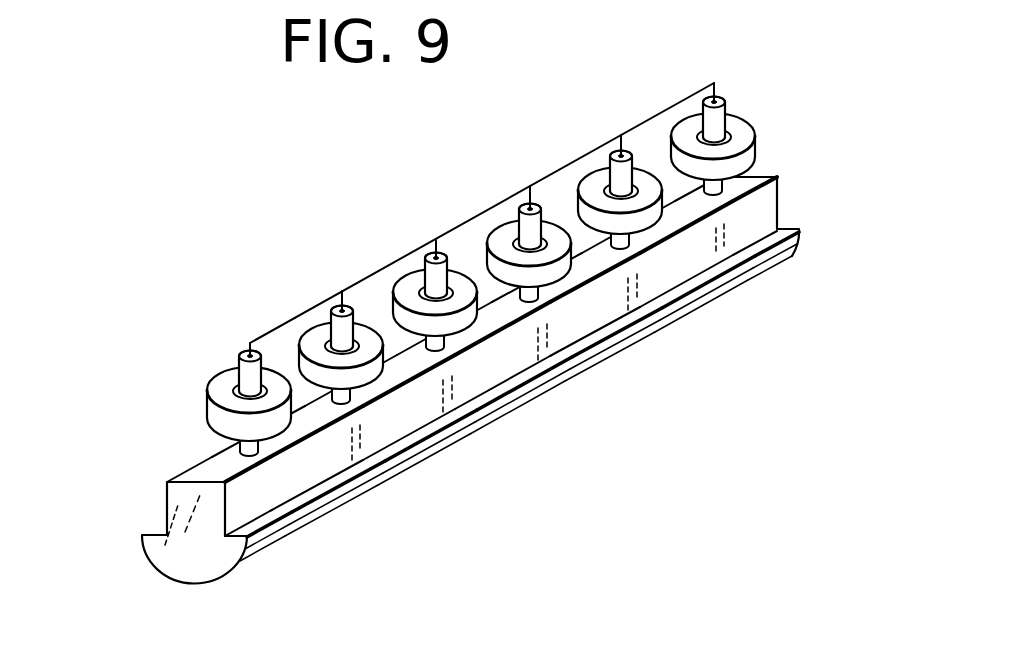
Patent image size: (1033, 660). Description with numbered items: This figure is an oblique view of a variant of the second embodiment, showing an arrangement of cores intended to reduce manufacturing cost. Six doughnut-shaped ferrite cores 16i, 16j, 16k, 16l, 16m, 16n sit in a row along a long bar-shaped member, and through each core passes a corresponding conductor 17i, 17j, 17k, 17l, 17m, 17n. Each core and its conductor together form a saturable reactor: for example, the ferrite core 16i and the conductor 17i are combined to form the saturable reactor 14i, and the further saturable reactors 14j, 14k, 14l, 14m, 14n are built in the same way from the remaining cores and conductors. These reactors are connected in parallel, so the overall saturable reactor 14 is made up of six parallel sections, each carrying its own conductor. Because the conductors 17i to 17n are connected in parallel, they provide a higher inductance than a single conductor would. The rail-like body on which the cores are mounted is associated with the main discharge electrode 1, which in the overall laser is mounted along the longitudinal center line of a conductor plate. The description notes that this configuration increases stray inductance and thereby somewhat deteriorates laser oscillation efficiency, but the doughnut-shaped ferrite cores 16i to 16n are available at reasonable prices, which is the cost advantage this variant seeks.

The main discharge electrode 1 is at (191, 567).
The saturable reactor 14 is at (753, 113).
The saturable reactor 14i is at (270, 457).
The saturable reactor 14j is at (363, 406).
The saturable reactor 14k is at (455, 355).
The saturable reactor 14l is at (550, 302).
The saturable reactor 14m is at (640, 253).
The saturable reactor 14n is at (733, 201).
The doughnut-shaped ferrite core 16i is at (210, 388).
The doughnut-shaped ferrite core 16j is at (302, 332).
The doughnut-shaped ferrite core 16k is at (405, 287).
The doughnut-shaped ferrite core 16l is at (493, 230).
The doughnut-shaped ferrite core 16m is at (590, 188).
The doughnut-shaped ferrite core 16n is at (682, 130).
The conductor 17i is at (240, 367).
The conductor 17j is at (331, 322).
The conductor 17k is at (425, 263).
The conductor 17l is at (519, 210).
The conductor 17m is at (621, 135).
The conductor 17n is at (714, 84).